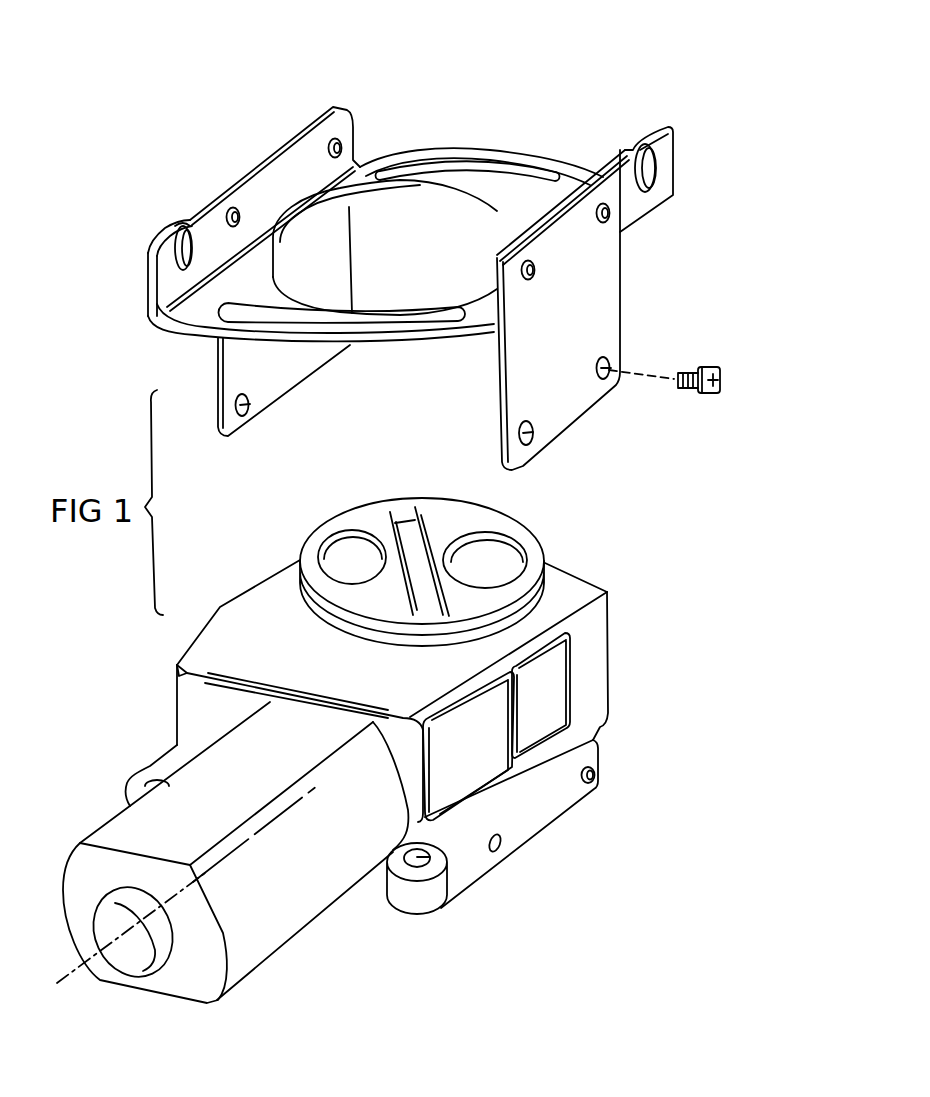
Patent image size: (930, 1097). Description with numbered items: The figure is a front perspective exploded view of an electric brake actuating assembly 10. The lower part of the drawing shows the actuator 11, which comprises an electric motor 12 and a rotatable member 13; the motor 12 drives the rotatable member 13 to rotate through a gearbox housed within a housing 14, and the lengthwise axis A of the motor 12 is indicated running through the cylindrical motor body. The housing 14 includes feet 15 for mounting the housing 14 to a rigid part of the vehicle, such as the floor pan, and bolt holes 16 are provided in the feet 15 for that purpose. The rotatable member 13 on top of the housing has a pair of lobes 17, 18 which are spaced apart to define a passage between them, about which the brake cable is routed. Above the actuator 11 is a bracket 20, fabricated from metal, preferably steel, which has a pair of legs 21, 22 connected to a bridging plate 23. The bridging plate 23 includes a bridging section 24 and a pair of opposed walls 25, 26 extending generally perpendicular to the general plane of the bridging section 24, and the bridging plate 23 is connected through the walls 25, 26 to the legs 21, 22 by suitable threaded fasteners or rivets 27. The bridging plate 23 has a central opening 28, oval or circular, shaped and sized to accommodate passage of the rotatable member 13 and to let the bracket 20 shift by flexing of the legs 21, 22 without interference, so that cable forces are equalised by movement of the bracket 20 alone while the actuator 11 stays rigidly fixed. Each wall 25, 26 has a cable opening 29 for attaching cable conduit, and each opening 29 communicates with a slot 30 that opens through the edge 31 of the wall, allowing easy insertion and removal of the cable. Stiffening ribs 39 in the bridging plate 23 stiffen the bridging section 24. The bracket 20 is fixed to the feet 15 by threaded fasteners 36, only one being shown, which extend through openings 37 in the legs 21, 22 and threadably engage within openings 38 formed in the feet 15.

The assembly 10 is at (146, 112).
The actuator 11 is at (140, 658).
The electric motor 12 is at (293, 913).
The rotatable member 13 is at (548, 564).
The housing 14 is at (597, 660).
The feet 15 is at (548, 808).
The bolt holes 16 is at (430, 862).
The lobe 17 is at (320, 536).
The lobe 18 is at (506, 522).
The bracket 20 is at (685, 97).
The leg 21 is at (220, 362).
The leg 22 is at (587, 317).
The bridging plate 23 is at (395, 155).
The bridging section 24 is at (493, 150).
The wall 25 is at (148, 280).
The wall 26 is at (665, 145).
The threaded fasteners or rivets 27 is at (330, 147).
The central opening 28 is at (500, 207).
The cable openings 29 is at (181, 253).
The slot 30 is at (186, 222).
The edge 31 is at (328, 108).
The threaded fasteners 36 is at (716, 366).
The openings 37 is at (250, 403).
The openings 38 is at (597, 770).
The stiffening ribs 39 is at (450, 162).
The axis A is at (83, 973).